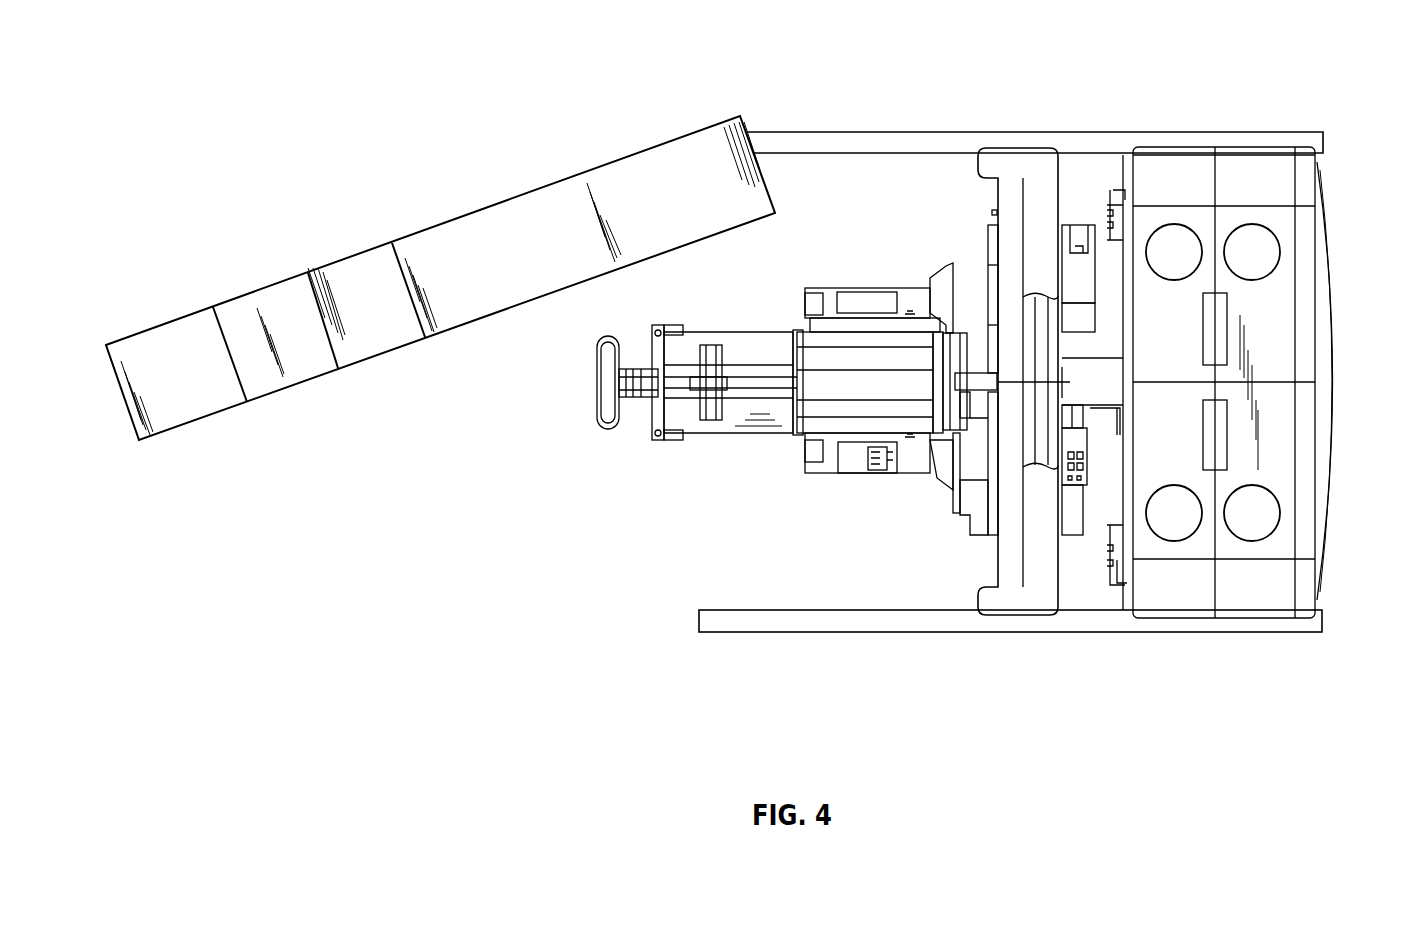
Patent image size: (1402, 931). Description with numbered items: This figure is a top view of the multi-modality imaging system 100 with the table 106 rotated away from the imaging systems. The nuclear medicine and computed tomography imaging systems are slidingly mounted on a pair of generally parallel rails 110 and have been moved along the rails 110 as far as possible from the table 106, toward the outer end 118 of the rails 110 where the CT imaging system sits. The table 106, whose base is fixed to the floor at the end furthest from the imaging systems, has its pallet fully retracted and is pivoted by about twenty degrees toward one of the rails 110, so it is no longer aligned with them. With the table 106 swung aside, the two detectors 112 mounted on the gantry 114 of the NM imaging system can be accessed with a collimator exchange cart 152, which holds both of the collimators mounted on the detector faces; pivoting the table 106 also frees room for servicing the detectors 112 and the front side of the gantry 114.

The multi-modality imaging system 100 is at (546, 50).
The table 106 is at (193, 311).
The rails 110 is at (814, 131).
The detectors 112 is at (826, 288).
The gantry 114 is at (978, 165).
The outer end 118 is at (1329, 139).
The collimator exchange cart 152 is at (662, 442).